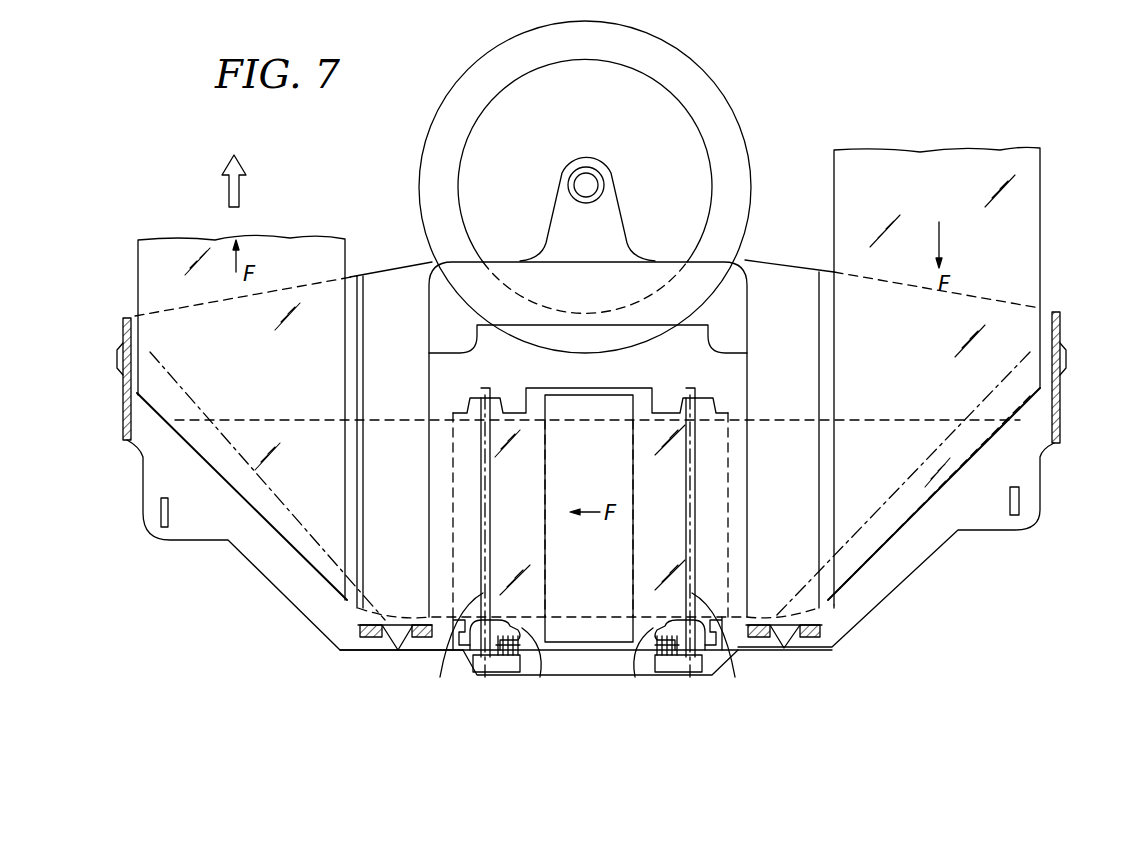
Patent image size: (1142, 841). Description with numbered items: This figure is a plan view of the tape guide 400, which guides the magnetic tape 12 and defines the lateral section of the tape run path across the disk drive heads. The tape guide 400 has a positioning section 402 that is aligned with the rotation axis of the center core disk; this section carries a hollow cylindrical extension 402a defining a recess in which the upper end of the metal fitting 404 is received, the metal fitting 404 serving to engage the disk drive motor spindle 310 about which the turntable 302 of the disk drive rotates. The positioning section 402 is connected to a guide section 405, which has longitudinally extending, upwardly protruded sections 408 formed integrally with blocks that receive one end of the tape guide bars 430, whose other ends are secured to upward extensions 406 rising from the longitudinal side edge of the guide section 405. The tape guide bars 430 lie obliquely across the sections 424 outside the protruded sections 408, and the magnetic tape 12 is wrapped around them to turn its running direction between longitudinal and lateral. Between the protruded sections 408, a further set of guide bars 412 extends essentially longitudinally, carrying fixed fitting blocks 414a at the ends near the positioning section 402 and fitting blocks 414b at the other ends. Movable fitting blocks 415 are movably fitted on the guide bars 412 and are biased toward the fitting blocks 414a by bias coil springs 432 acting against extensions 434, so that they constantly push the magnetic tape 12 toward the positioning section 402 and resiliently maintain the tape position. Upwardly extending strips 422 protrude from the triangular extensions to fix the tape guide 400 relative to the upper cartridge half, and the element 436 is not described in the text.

The magnetic tape 12 is at (1030, 214).
The turntable 302 is at (728, 118).
The disk drive motor spindle 310 is at (593, 181).
The tape guide 400 is at (800, 246).
The positioning section 402 is at (608, 203).
The hollow cylindrical extension 402a is at (577, 169).
The metal fitting 404 is at (972, 500).
The guide section 405 is at (764, 260).
The upward extensions 406 is at (122, 430).
The upwardly protruded sections 408 is at (370, 364).
The guide bars 412 is at (450, 628).
The fitting blocks 414a is at (490, 405).
The fitting blocks 414b is at (472, 672).
The movable fitting blocks 415 is at (470, 642).
The upwardly extending strips 422 is at (163, 527).
The sections 424 is at (200, 540).
The tape guide bars 430 is at (290, 502).
The bias coil springs 432 is at (512, 662).
The extensions 434 is at (583, 645).
The center block 436 is at (588, 645).